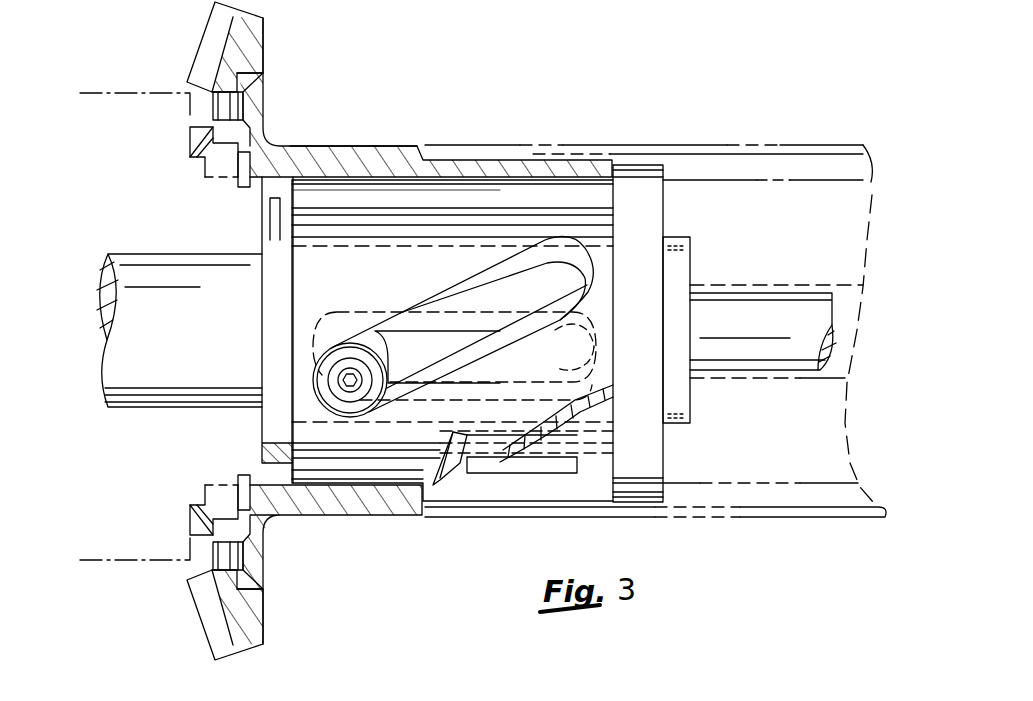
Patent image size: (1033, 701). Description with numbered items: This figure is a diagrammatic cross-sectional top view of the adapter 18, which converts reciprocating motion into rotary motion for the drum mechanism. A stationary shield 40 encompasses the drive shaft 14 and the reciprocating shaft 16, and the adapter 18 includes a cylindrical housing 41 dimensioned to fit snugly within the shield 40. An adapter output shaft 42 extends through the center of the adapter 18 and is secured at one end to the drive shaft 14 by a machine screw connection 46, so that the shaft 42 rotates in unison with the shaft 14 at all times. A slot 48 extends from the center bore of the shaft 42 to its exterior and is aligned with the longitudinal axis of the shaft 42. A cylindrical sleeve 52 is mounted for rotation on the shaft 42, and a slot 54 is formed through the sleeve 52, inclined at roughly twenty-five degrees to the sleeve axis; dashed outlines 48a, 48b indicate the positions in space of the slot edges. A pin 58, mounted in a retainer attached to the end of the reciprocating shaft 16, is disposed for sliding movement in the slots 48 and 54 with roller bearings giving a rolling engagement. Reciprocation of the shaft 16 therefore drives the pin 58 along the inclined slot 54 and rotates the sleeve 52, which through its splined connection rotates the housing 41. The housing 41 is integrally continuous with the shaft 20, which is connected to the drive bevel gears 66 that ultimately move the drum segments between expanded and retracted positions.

The drive shaft 14 is at (722, 195).
The reciprocating shaft 16 is at (777, 313).
The adapter 18 is at (463, 131).
The shaft 20 is at (297, 146).
The stationary shield 40 is at (450, 518).
The cylindrical housing 41 is at (386, 146).
The adapter output shaft 42 is at (187, 337).
The machine screw connection 46 is at (633, 180).
The slot 48 is at (497, 330).
The strap lower portion 48a is at (592, 365).
The strap upper portion 48b is at (590, 330).
The cylindrical sleeve 52 is at (503, 197).
The slot 54 is at (567, 253).
The pin 58 is at (370, 378).
The drive bevel gears 66 is at (247, 56).